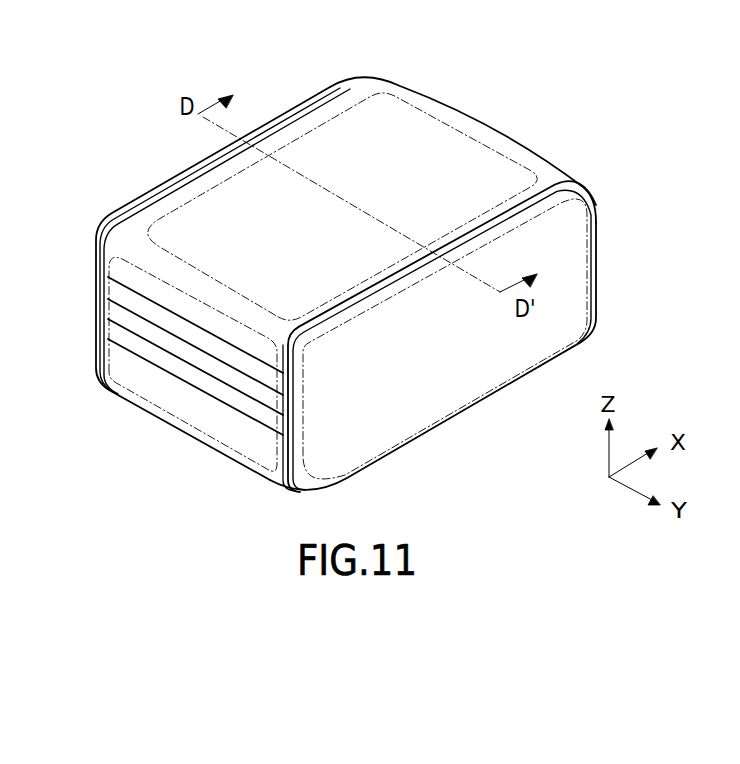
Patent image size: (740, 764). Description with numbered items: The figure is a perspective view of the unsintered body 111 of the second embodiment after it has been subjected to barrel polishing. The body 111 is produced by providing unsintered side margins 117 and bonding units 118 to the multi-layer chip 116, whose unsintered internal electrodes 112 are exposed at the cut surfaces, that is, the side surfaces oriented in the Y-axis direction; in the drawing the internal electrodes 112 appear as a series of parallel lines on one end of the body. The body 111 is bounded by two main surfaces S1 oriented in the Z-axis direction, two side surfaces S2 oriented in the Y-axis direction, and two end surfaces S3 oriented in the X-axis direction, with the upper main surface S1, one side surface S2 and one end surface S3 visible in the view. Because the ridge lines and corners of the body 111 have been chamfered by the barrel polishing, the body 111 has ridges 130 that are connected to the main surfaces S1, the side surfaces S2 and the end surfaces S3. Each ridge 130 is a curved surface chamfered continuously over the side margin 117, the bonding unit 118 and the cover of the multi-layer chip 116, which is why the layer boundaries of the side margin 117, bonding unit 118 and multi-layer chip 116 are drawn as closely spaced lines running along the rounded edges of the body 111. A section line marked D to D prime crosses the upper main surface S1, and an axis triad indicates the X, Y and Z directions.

The unsintered body 111 is at (483, 85).
The first internal electrodes 112 is at (165, 308).
The multi-layer chip 116 is at (381, 88).
The side margin 117 is at (320, 93).
The bonding unit 118 is at (341, 84).
The ridge 130 is at (130, 244).
The main surface S1 is at (200, 220).
The side surface S2 is at (462, 367).
The end surface S3 is at (133, 370).